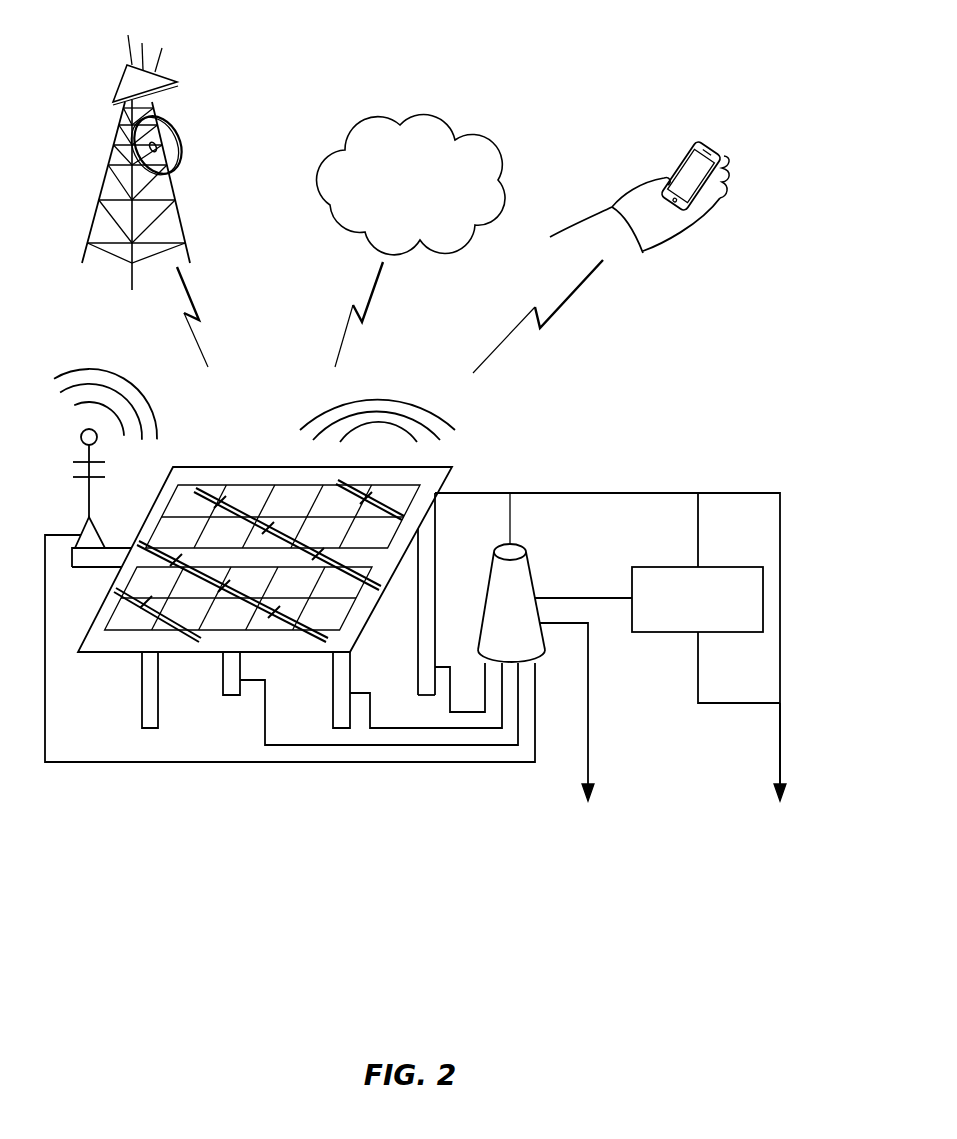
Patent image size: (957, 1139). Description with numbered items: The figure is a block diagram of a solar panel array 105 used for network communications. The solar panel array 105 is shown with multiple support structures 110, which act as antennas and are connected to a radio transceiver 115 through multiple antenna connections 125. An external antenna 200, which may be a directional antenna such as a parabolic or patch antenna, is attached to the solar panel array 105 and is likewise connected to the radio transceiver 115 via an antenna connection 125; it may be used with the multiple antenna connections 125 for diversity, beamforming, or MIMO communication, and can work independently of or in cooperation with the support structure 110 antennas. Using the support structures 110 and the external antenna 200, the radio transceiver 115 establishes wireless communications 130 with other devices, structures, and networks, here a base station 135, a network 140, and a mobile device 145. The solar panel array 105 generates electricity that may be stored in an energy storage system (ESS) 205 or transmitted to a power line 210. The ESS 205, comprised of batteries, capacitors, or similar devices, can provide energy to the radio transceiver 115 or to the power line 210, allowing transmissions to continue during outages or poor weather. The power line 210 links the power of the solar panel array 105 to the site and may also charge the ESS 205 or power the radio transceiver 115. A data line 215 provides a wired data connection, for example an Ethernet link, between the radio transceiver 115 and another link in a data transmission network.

The solar panel array 105 is at (202, 470).
The support structures 110 is at (222, 686).
The radio transceiver 115 is at (498, 638).
The antenna connections 125 is at (393, 785).
The wireless communications 130 is at (582, 370).
The base station 135 is at (185, 196).
The network 140 is at (480, 232).
The device 145 is at (672, 162).
The external antenna 200 is at (83, 529).
The energy storage system (ESS) 205 is at (631, 578).
The power line 210 is at (742, 785).
The data line 215 is at (580, 745).